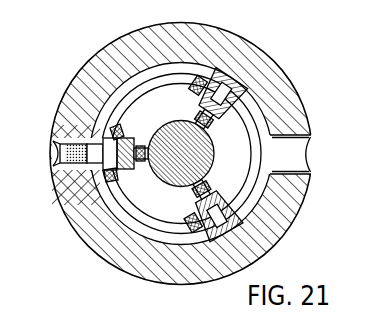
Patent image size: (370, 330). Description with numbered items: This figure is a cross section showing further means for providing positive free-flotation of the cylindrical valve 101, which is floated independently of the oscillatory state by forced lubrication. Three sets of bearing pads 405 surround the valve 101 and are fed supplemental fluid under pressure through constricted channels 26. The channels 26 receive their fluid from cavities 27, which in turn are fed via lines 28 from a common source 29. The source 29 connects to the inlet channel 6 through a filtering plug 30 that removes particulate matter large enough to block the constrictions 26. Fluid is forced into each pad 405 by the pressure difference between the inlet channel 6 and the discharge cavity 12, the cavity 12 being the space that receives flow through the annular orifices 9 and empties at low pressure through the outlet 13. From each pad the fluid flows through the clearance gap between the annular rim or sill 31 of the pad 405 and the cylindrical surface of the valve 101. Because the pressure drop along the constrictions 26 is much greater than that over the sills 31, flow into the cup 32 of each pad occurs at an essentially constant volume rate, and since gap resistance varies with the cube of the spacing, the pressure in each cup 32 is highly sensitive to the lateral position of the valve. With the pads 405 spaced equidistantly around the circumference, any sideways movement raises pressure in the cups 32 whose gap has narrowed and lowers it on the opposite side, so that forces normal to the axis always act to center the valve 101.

The inlet channel 6 is at (53, 157).
The annular orifices 9 is at (159, 197).
The discharge cavity 12 is at (181, 153).
The outlet 13 is at (291, 154).
The constricted channels 26 is at (128, 146).
The cavities 27 is at (193, 89).
The lines 28 is at (139, 98).
The common source 29 is at (61, 205).
The filtering plug 30 is at (58, 171).
The annular rim or sill 31 is at (199, 118).
The cup 32 is at (210, 124).
The cylindrical valve 101 is at (203, 163).
The bearing pads 405 is at (220, 115).